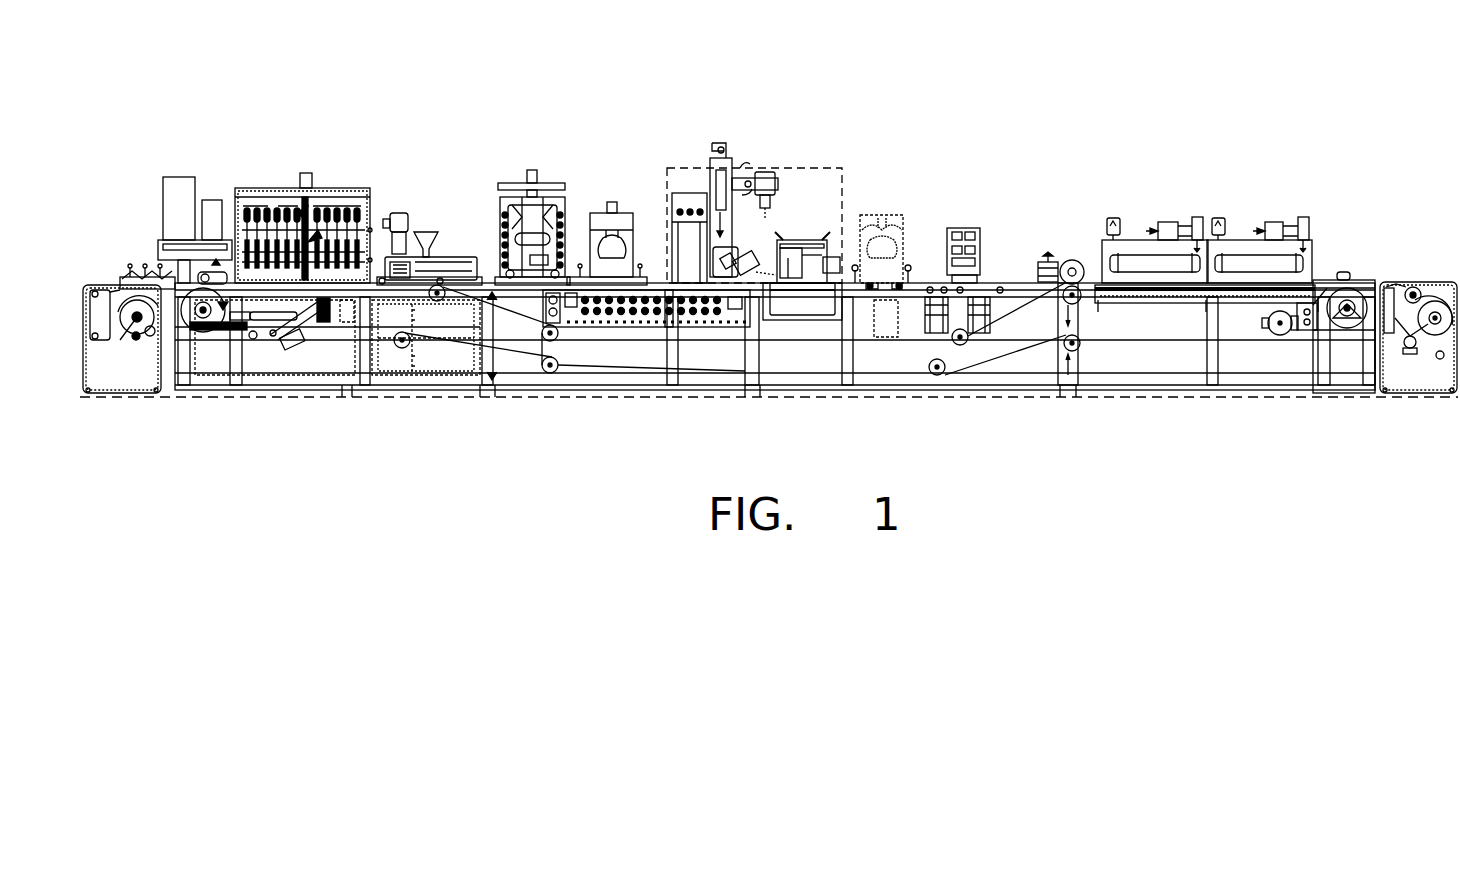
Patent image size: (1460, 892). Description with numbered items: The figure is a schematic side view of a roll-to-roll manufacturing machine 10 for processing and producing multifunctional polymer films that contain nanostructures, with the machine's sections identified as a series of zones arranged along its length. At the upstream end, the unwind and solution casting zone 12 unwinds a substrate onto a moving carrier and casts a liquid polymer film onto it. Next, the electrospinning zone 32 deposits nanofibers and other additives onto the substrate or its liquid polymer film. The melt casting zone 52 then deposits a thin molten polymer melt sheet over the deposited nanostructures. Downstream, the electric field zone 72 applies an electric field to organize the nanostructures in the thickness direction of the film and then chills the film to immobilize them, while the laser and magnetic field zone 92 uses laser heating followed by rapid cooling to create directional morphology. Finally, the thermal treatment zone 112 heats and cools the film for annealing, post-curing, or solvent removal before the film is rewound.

The roll-to-roll manufacturing machine 10 is at (285, 87).
The unwind and solution casting zone 12 is at (132, 401).
The electrospinning zone 32 is at (268, 180).
The melt casting zone 52 is at (426, 218).
The electric field zone 72 is at (567, 170).
The laser and magnetic field zone 92 is at (768, 158).
The thermal treatment zone 112 is at (1162, 205).